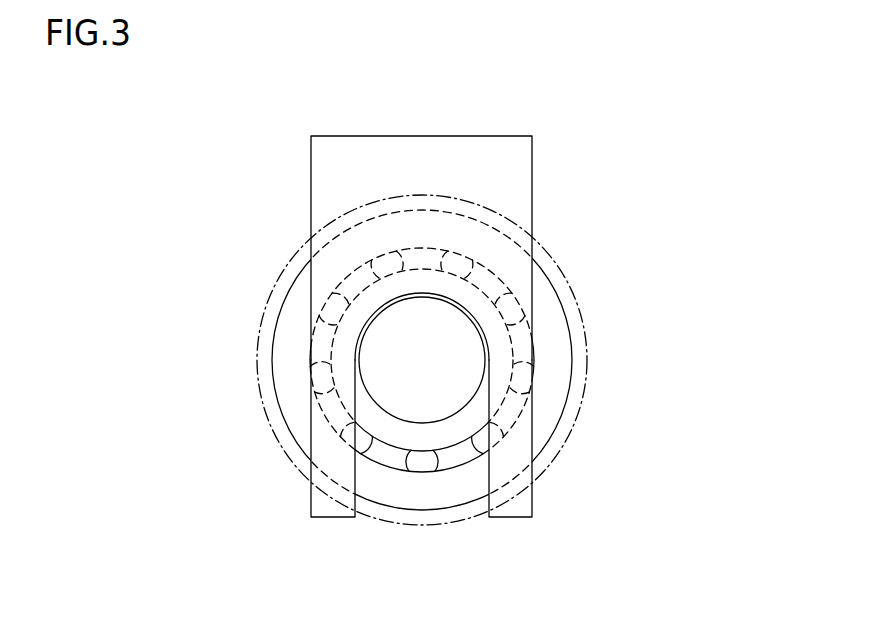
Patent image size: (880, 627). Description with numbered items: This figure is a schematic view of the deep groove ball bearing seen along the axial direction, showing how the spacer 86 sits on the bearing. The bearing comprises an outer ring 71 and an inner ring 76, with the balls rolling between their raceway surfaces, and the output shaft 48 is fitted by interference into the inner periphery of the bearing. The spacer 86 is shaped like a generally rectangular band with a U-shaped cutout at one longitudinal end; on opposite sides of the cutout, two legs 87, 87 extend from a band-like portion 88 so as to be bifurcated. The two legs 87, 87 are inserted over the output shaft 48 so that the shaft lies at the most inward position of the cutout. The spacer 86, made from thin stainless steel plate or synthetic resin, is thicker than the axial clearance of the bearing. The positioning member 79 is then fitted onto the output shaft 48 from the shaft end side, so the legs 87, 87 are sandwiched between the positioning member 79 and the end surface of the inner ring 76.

The output shaft 48 is at (443, 408).
The outer ring 71 is at (287, 402).
The inner ring 76 is at (402, 440).
The positioning member 79 is at (578, 293).
The spacer 86 is at (615, 207).
The legs 87 is at (313, 503).
The band-like portion 88 is at (505, 165).